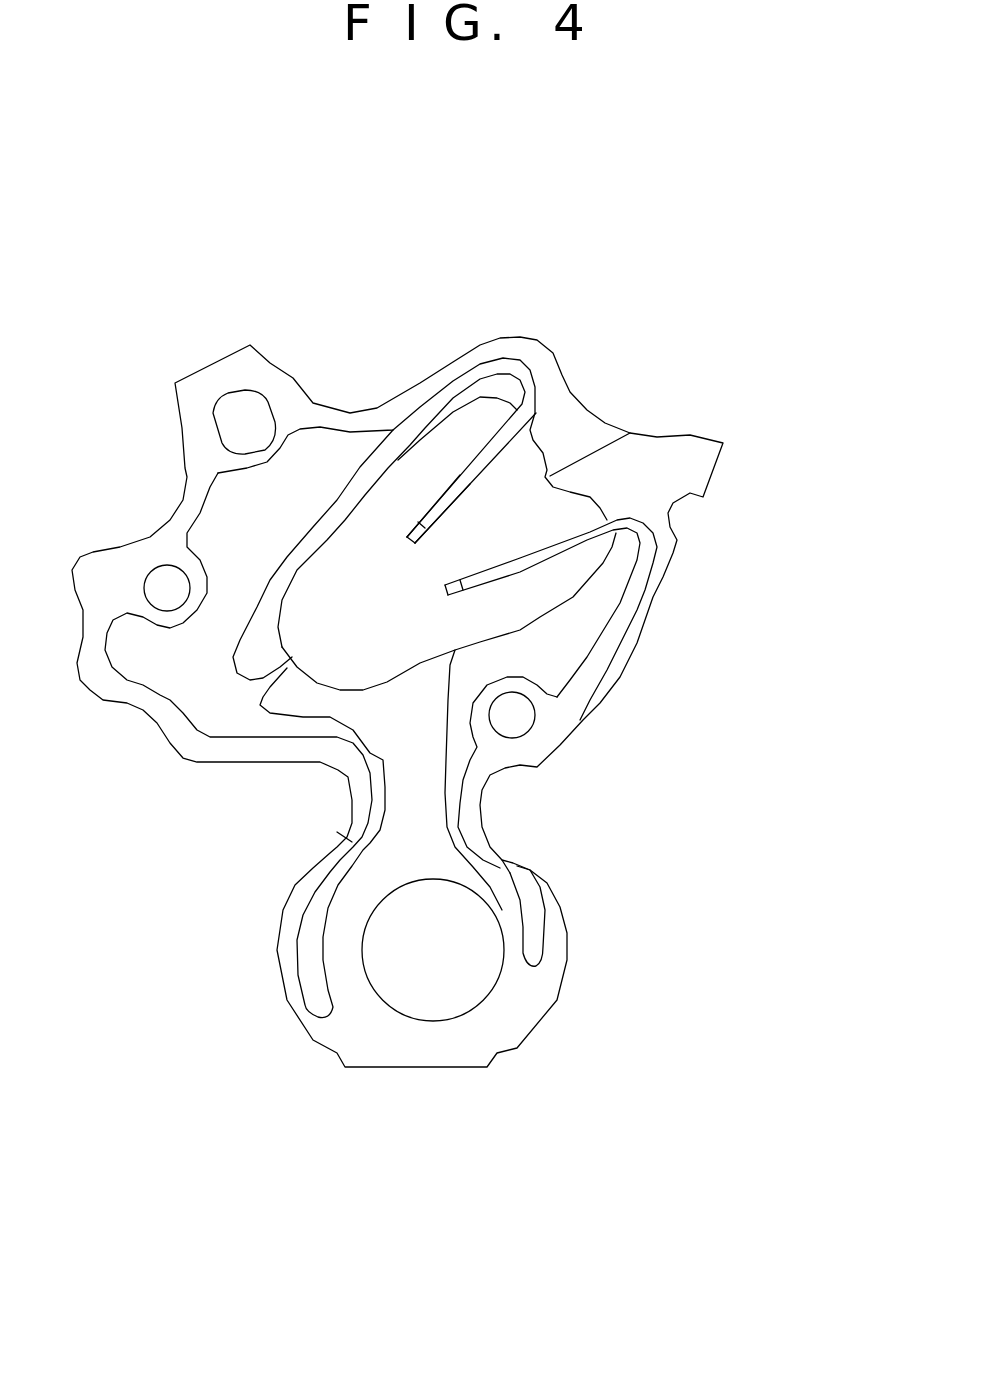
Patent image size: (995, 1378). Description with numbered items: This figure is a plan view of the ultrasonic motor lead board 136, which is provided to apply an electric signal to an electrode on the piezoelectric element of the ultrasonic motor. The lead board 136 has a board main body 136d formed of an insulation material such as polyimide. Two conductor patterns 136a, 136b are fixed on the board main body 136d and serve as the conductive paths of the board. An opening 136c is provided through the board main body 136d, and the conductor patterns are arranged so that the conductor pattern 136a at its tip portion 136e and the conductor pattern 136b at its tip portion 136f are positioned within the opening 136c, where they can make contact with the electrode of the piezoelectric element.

The ultrasonic motor lead board 136 is at (610, 260).
The conductor pattern 136a is at (463, 745).
The conductor pattern 136b is at (298, 728).
The opening 136c is at (433, 447).
The board main body 136d is at (415, 1048).
The tip portion 136e is at (503, 572).
The tip portion 136f is at (437, 500).